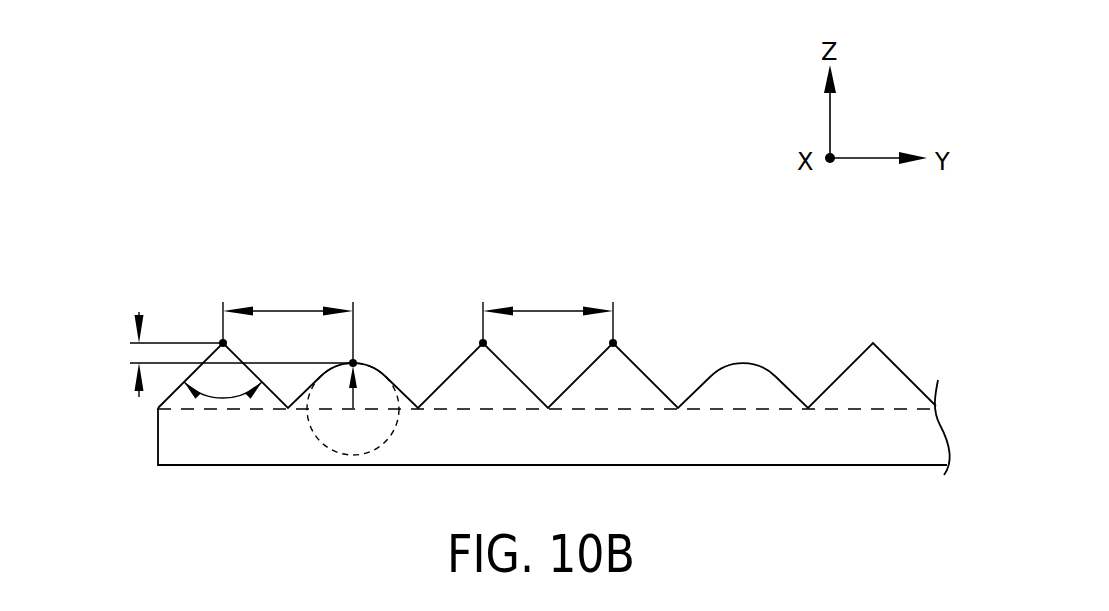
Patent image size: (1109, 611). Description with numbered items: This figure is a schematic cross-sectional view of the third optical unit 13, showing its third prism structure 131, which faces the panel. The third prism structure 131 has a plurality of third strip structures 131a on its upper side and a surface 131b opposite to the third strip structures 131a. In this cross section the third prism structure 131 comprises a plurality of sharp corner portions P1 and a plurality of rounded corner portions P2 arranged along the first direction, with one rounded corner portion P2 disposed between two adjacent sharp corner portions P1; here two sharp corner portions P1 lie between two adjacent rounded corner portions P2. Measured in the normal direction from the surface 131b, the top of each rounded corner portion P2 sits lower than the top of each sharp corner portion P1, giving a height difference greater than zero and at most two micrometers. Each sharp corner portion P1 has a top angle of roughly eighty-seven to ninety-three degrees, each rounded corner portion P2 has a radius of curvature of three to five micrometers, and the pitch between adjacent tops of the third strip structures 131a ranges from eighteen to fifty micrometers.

The third optical unit 13 is at (148, 260).
The third prism structure 131 is at (873, 230).
The third strip structures 131a is at (547, 375).
The surface 131b is at (722, 466).
The sharp corner portions P1 is at (213, 345).
The rounded corner portions P2 is at (364, 375).